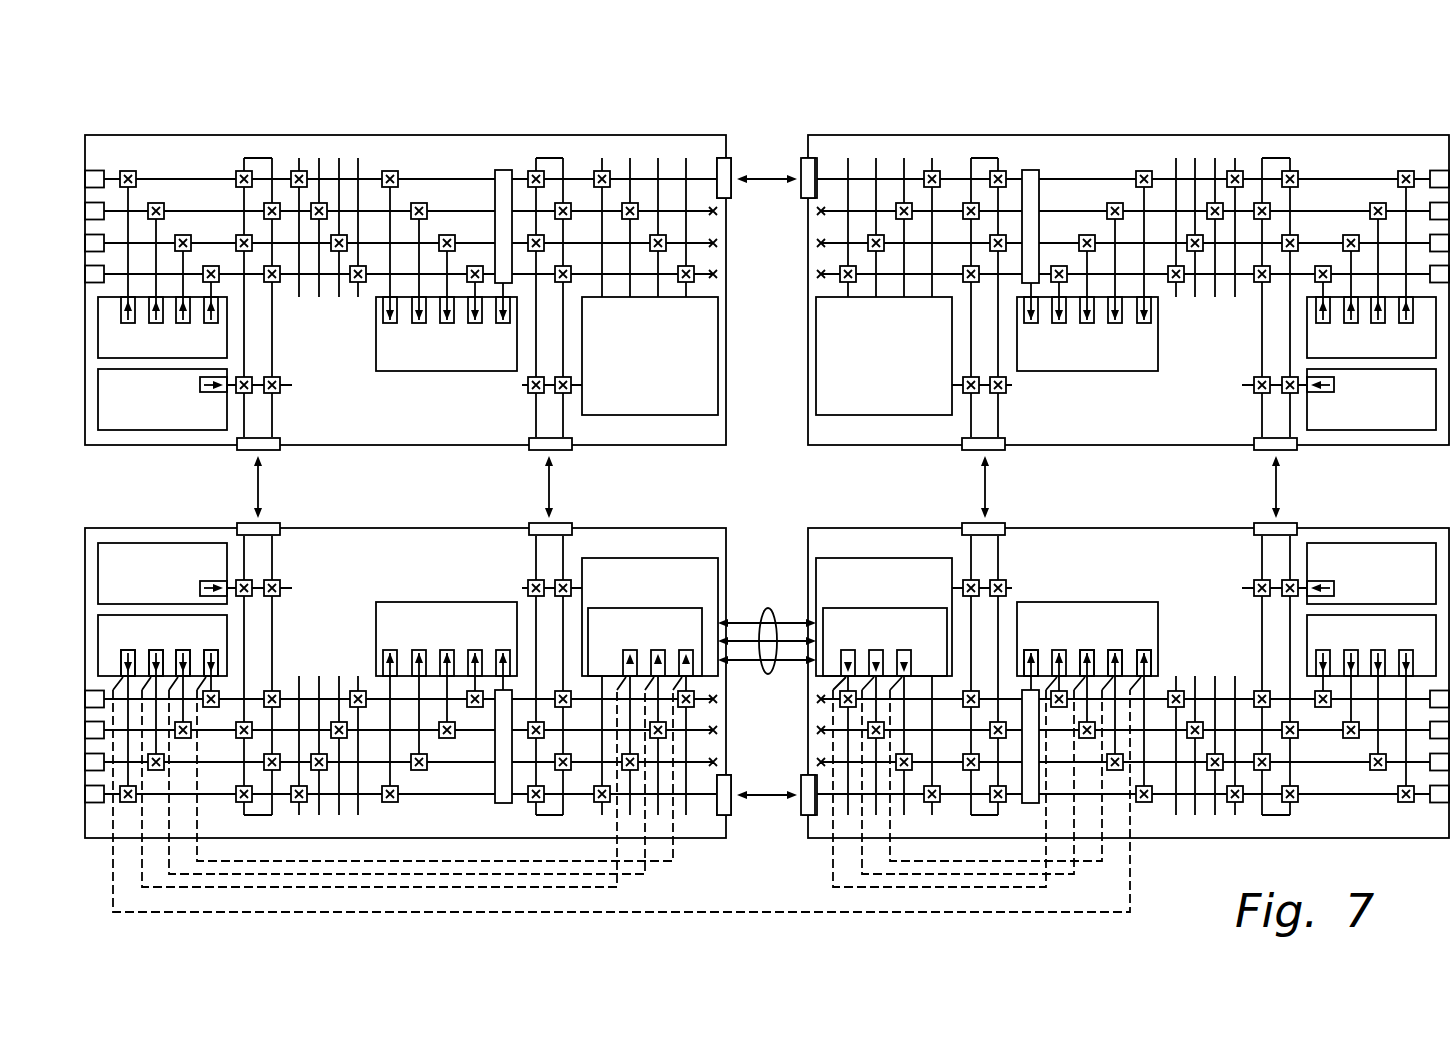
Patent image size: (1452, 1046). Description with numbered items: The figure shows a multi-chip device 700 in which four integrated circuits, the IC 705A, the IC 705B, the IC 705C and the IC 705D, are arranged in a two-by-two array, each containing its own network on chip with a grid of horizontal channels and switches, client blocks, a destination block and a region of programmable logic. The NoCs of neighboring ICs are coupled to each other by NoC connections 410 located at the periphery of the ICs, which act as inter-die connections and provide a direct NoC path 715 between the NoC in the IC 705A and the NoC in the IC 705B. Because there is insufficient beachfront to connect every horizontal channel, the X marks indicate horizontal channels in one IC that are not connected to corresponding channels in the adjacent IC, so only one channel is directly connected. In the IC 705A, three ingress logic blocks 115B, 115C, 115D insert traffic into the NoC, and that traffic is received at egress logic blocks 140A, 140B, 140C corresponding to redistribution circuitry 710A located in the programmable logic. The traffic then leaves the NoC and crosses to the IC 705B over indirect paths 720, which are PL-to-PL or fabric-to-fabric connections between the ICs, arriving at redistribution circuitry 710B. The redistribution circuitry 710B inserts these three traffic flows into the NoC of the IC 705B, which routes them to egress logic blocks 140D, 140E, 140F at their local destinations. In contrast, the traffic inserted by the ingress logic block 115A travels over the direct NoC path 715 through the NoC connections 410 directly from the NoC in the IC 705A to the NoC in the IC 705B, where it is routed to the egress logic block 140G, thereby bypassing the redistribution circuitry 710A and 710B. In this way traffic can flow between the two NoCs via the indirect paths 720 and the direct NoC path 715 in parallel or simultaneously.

The multi-chip device 700 is at (422, 82).
The IC 705A is at (407, 666).
The IC 705B is at (1126, 666).
The IC 705C is at (940, 134).
The IC 705D is at (218, 134).
The NoC connections 410 is at (802, 190).
The redistribution circuitry 710A is at (635, 606).
The redistribution circuitry 710B is at (920, 606).
The direct NoC path 715 is at (327, 912).
The indirect paths 720 is at (768, 608).
The ingress logic block 115A is at (121, 668).
The ingress logic block 115B is at (149, 668).
The ingress logic block 115C is at (176, 668).
The ingress logic block 115D is at (204, 668).
The egress logic block 140A is at (623, 650).
The egress logic block 140B is at (651, 652).
The egress logic block 140C is at (679, 652).
The egress logic block 140D is at (1040, 660).
The egress logic block 140E is at (1097, 664).
The egress logic block 140F is at (1125, 664).
The egress logic block 140G is at (1152, 663).